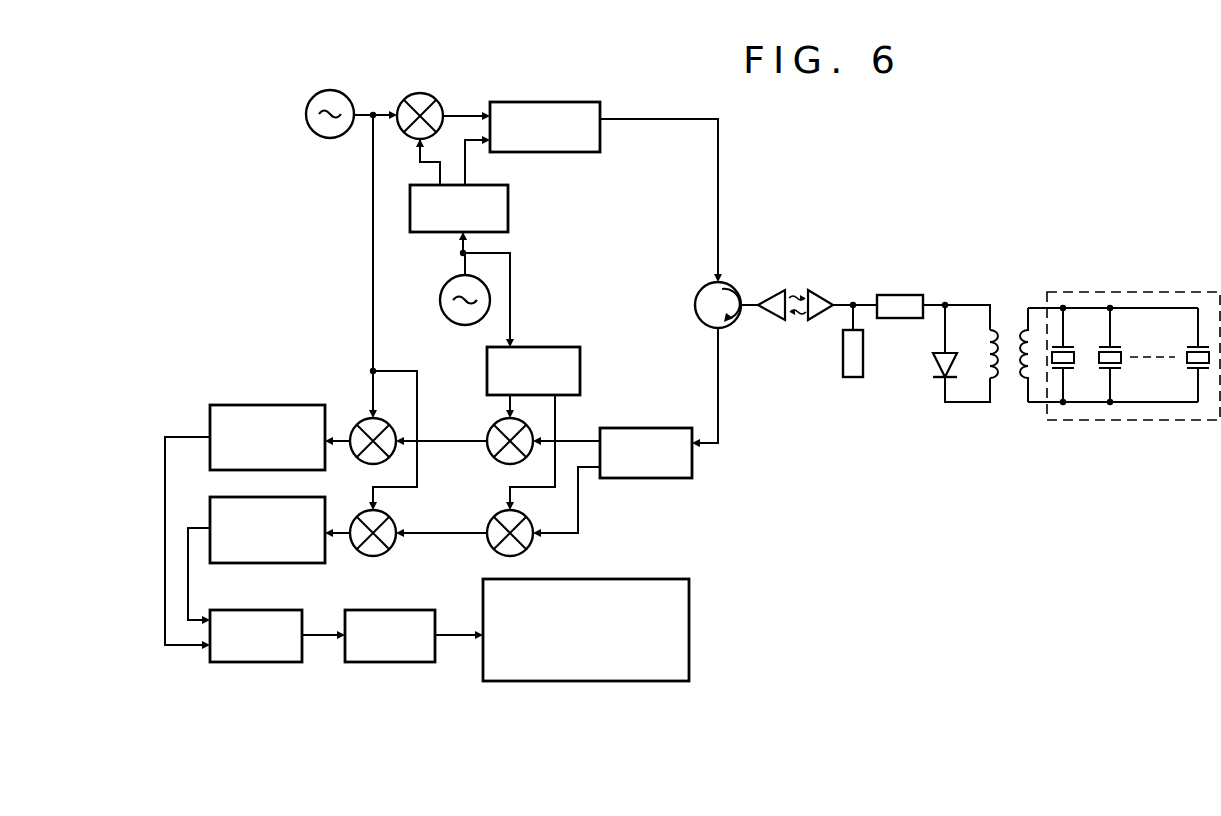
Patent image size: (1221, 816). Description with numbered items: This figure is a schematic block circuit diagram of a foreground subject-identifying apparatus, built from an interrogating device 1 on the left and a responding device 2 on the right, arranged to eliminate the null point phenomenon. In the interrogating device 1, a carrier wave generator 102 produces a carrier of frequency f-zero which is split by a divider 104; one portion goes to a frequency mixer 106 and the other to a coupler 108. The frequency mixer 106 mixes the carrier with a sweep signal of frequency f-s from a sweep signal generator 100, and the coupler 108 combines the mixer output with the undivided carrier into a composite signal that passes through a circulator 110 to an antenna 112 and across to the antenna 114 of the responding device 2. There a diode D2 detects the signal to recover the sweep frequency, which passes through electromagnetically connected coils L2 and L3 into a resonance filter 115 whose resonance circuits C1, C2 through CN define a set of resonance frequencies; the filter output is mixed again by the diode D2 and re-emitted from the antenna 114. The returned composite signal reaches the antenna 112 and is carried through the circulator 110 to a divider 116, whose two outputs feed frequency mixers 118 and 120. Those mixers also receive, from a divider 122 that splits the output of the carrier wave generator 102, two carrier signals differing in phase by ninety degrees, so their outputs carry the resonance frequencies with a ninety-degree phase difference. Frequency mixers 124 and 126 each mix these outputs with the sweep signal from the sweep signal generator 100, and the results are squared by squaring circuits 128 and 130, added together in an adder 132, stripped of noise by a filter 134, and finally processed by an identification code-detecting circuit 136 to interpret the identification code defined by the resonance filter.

The interrogating device 1 is at (606, 103).
The responding device 2 is at (1024, 280).
The sweep signal generator 100 is at (303, 130).
The carrier wave generator 102 is at (448, 282).
The divider 104 is at (508, 212).
The frequency mixer 106 is at (436, 94).
The coupler 108 is at (600, 143).
The circulator 110 is at (734, 288).
The antenna 112 is at (766, 319).
The antenna 114 is at (818, 290).
The resonance filter 115 is at (1133, 340).
The divider 116 is at (653, 478).
The frequency mixer 118 is at (490, 431).
The frequency mixer 120 is at (528, 548).
The divider 122 is at (580, 371).
The frequency mixer 124 is at (391, 452).
The frequency mixer 126 is at (391, 545).
The squaring circuit 128 is at (253, 470).
The squaring circuit 130 is at (255, 563).
The adder 132 is at (233, 662).
The filter 134 is at (383, 662).
The identification code-detecting circuit 136 is at (582, 681).
The diode D2 is at (937, 361).
The coil L2 is at (1000, 383).
The coil L3 is at (1024, 380).
The resonance circuit C1 is at (1068, 371).
The resonance circuit C2 is at (1114, 371).
The resonance circuit CN is at (1187, 355).